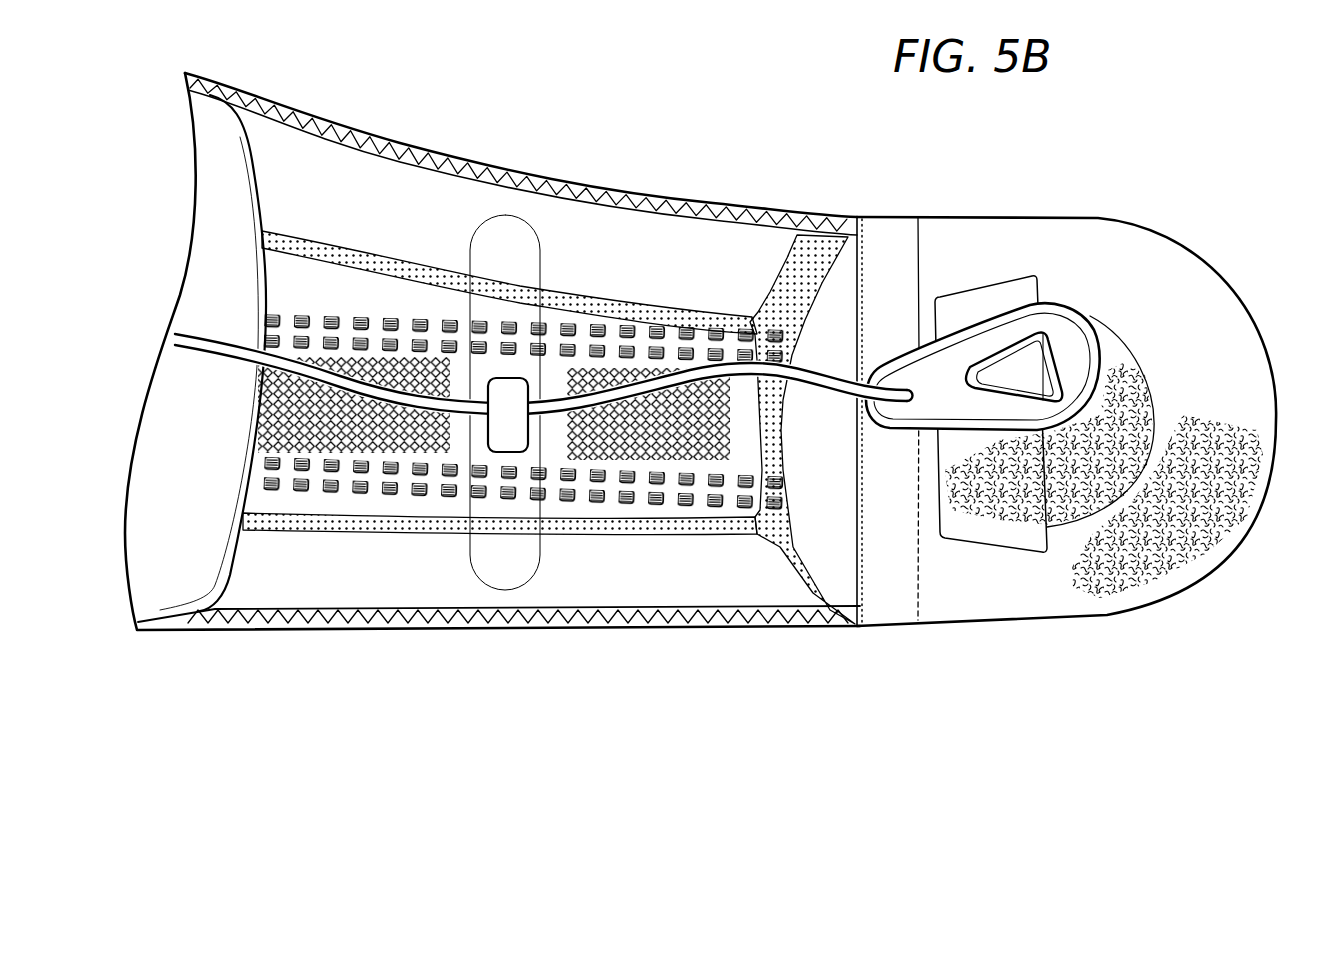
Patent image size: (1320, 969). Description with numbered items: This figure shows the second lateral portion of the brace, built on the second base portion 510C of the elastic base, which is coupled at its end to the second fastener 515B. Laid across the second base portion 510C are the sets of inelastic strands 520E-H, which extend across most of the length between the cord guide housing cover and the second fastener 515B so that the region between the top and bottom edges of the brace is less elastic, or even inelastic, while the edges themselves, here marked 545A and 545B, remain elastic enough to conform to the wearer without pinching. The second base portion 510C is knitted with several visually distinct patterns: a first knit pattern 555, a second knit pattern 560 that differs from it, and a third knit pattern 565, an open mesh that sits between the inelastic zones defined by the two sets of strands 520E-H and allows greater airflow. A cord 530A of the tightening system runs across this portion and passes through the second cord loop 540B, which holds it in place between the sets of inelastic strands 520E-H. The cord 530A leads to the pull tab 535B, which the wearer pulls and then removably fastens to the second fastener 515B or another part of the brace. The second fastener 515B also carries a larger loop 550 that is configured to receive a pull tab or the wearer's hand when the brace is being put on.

The second base portion 510C is at (273, 628).
The second fastener 515B is at (972, 593).
The sets of inelastic strands 520E-H is at (448, 483).
The cord 530A is at (548, 385).
The pull tab 535B is at (1078, 327).
The second cord loop 540B is at (508, 438).
The upper edge band 545A is at (700, 210).
The lower edge band 545B is at (382, 618).
The loop 550 is at (1030, 488).
The first knit pattern 555 is at (647, 510).
The second knit pattern 560 is at (815, 593).
The third knit pattern 565 is at (710, 397).